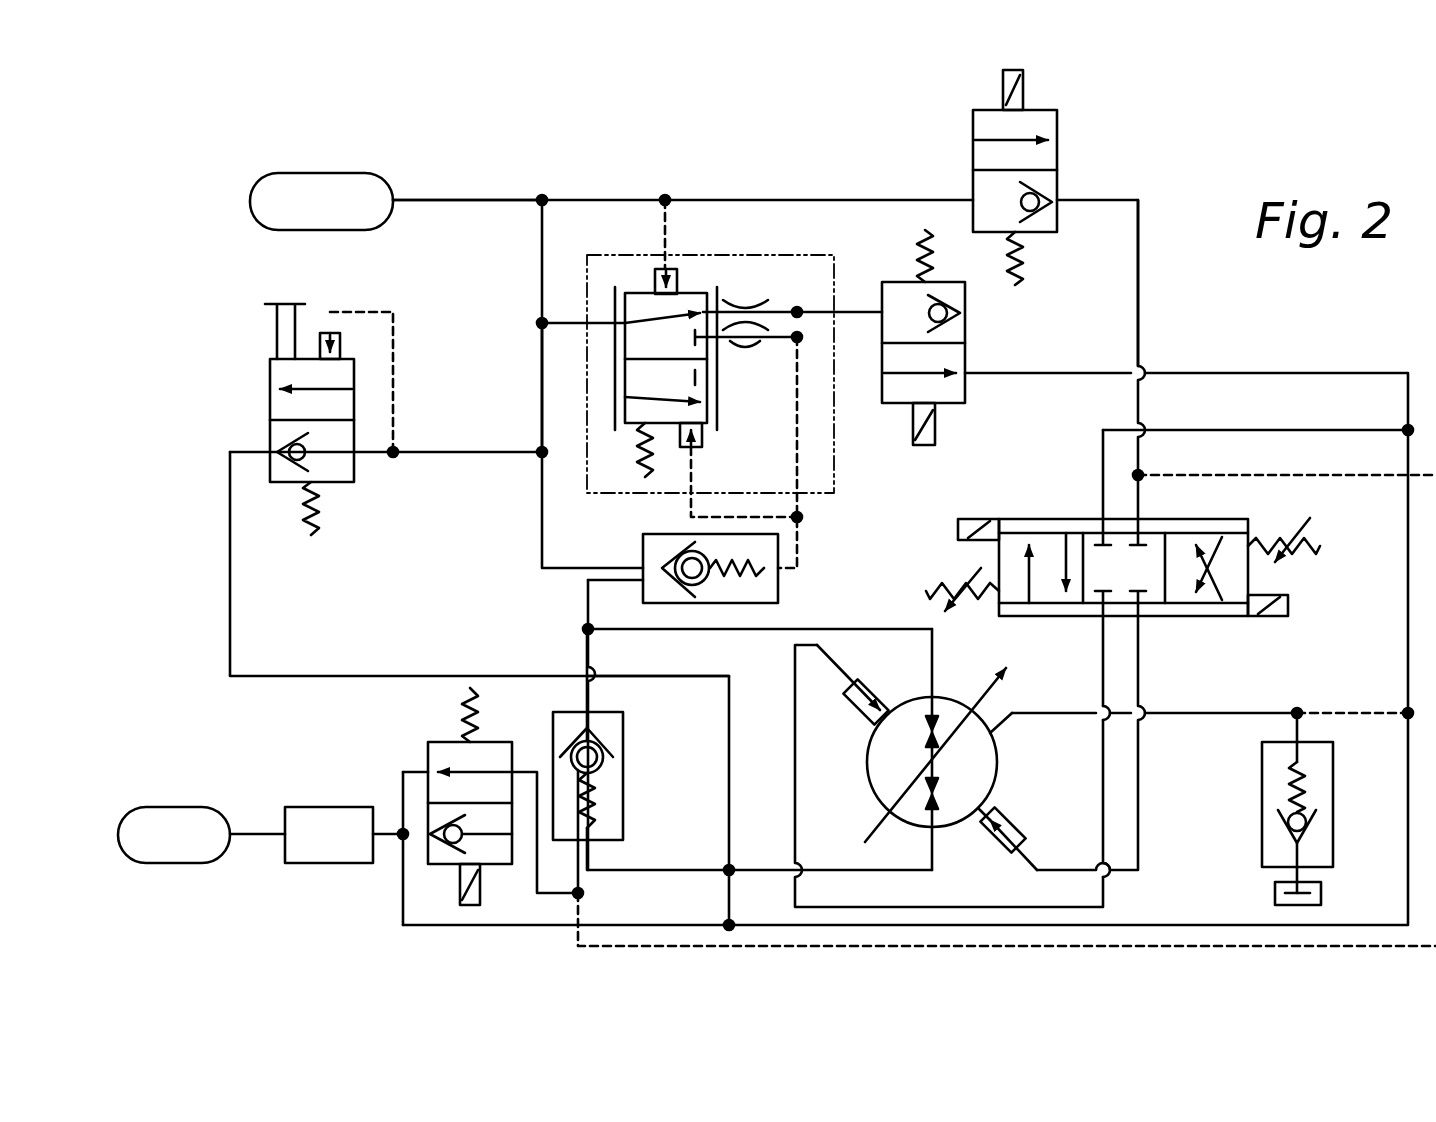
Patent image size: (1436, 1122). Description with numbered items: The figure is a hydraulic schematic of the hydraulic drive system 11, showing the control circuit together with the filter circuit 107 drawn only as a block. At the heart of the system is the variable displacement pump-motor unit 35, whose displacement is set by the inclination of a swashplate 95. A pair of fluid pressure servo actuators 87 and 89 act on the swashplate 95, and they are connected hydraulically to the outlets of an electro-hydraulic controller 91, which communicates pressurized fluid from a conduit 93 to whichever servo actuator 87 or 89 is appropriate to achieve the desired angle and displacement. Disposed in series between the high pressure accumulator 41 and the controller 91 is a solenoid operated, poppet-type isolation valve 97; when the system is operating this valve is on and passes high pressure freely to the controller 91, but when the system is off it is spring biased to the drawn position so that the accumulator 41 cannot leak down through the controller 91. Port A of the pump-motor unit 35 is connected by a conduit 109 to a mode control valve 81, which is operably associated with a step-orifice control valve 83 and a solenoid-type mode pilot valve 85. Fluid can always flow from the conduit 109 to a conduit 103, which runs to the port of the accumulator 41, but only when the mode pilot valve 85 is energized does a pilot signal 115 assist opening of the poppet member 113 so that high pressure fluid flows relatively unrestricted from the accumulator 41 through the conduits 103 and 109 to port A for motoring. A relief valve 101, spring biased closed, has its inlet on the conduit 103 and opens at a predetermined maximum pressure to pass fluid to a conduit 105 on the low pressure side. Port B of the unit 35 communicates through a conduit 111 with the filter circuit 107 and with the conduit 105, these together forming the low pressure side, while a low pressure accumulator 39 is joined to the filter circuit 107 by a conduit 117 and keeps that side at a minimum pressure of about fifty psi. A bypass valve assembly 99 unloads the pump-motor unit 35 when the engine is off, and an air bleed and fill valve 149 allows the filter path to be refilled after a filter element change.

The hydraulic drive system 11 is at (193, 182).
The high pressure accumulator 41 is at (313, 173).
The conduit 93 is at (603, 197).
The isolation valve 97 is at (973, 157).
The mode pilot valve 85 is at (978, 346).
The step-orifice control valve 83 is at (746, 245).
The pilot signal 115 is at (797, 418).
The conduit 103 is at (542, 388).
The relief valve 101 is at (246, 407).
The conduit 105 is at (232, 545).
The poppet member 113 is at (660, 538).
The conduit 109 is at (792, 629).
The mode control valve 81 is at (712, 612).
The pump-motor unit 35 is at (949, 704).
The swashplate 95 is at (977, 685).
The servo actuator 89 is at (860, 720).
The servo actuator 87 is at (1000, 800).
The conduit 111 is at (942, 907).
The electro-hydraulic controller 91 is at (1038, 512).
The air bleed and fill valve 149 is at (1258, 897).
The low pressure accumulator 39 is at (170, 805).
The conduit 117 is at (255, 838).
The filter circuit 107 is at (328, 797).
The bypass valve assembly 99 is at (640, 798).